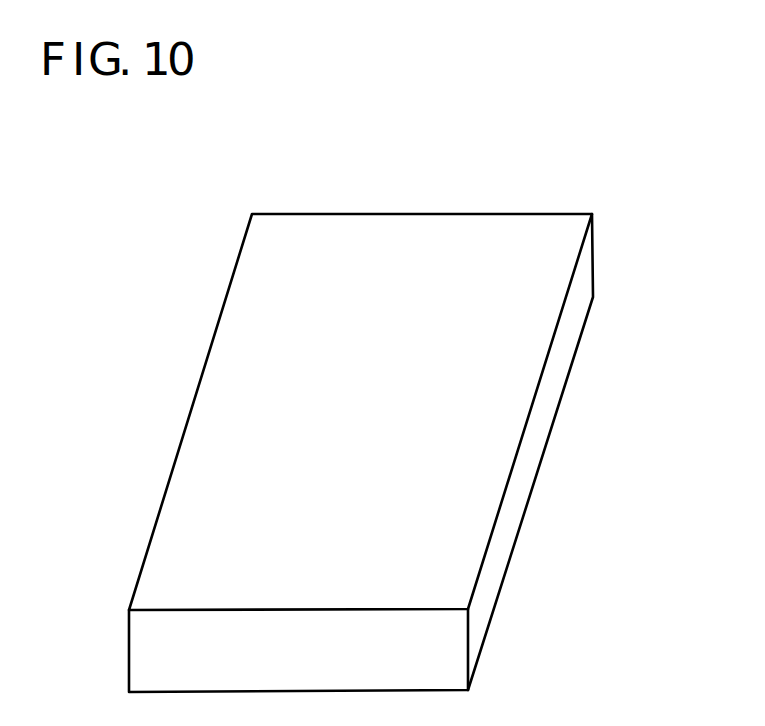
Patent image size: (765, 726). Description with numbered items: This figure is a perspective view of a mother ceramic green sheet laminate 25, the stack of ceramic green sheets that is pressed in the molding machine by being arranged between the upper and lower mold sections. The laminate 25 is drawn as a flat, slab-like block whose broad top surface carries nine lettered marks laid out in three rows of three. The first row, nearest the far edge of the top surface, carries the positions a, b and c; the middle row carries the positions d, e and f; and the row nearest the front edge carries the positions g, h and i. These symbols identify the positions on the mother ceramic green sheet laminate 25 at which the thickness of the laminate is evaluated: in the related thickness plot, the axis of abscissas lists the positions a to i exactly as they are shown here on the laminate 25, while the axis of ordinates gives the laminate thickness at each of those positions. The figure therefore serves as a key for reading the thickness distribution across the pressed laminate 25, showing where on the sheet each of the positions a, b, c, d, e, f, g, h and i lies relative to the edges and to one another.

The mother ceramic green sheet laminate 25 is at (473, 483).
The position a is at (282, 273).
The position b is at (387, 273).
The position c is at (491, 273).
The position d is at (238, 418).
The position e is at (352, 418).
The position f is at (461, 417).
The position g is at (181, 559).
The position h is at (310, 561).
The position i is at (414, 561).